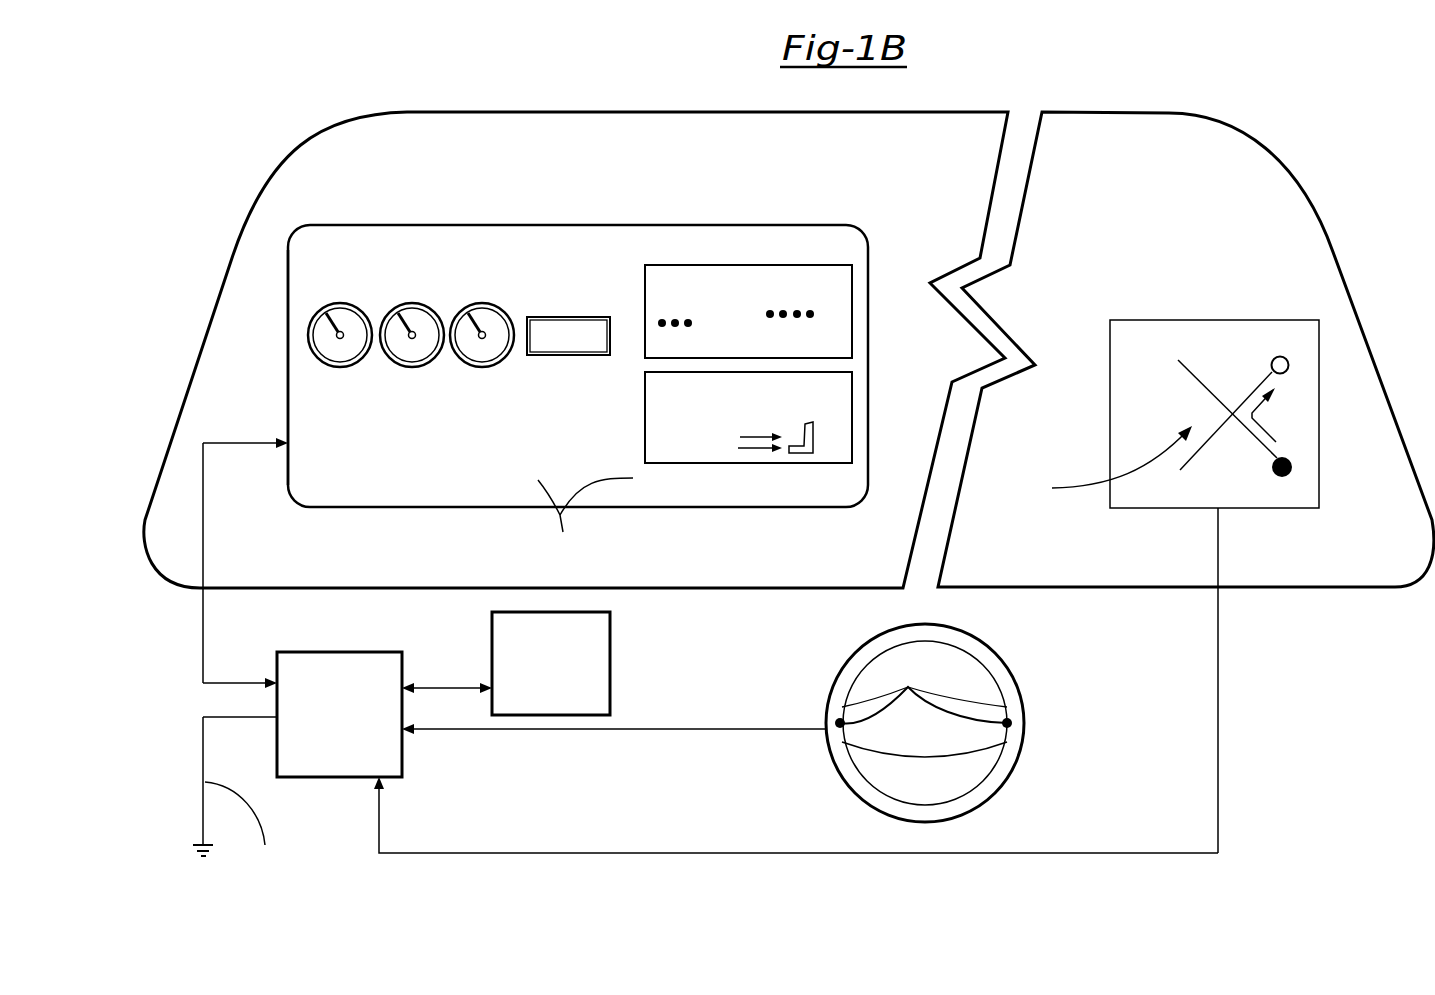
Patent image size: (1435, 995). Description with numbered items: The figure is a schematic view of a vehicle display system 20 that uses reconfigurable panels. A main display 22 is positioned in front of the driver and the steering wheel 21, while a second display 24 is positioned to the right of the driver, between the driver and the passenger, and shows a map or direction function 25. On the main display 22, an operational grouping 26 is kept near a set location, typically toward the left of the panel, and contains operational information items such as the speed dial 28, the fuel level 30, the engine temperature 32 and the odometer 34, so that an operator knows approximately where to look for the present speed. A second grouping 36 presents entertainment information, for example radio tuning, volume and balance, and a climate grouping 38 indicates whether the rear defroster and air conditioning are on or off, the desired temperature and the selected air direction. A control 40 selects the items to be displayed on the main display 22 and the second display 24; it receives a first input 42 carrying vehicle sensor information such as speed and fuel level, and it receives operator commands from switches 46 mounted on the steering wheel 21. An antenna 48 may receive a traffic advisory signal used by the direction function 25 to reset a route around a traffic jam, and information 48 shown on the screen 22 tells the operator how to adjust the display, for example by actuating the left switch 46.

The vehicle display system 20 is at (637, 95).
The steering wheel 21 is at (1013, 763).
The main display 22 is at (482, 238).
The second display 24 is at (1150, 348).
The map or direction function 25 is at (1108, 464).
The operational grouping 26 is at (288, 308).
The speed dial 28 is at (343, 312).
The fuel level 30 is at (417, 312).
The engine temperature 32 is at (485, 312).
The odometer 34 is at (567, 320).
The second grouping 36 is at (797, 275).
The climate grouping 38 is at (840, 400).
The control 40 is at (710, 645).
The first input 42 is at (551, 663).
The switches 46 is at (923, 695).
The antenna 48 is at (413, 679).